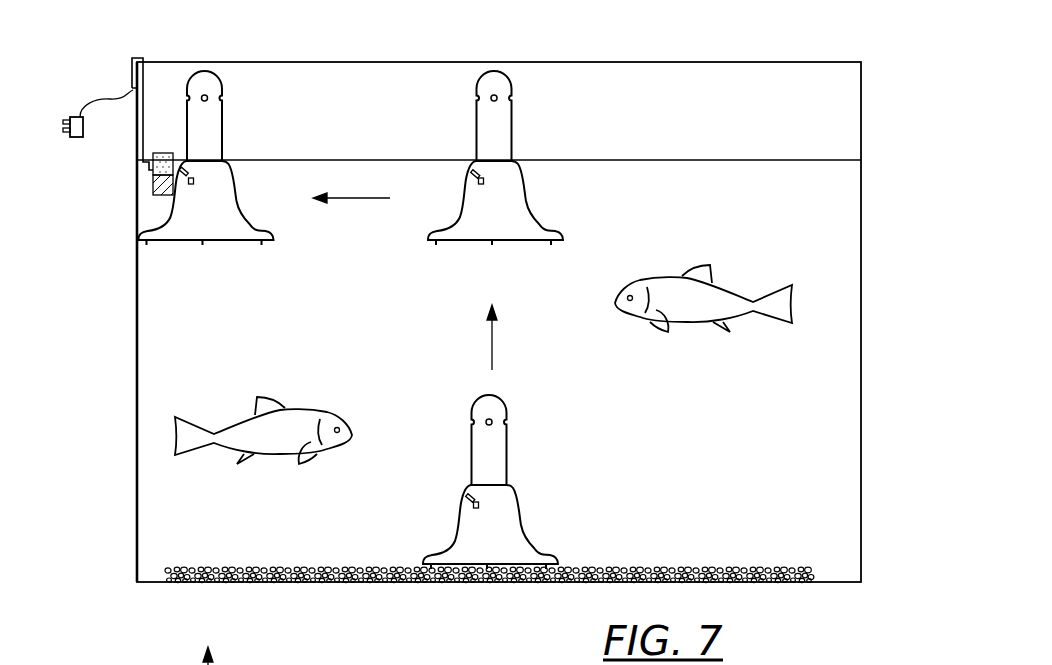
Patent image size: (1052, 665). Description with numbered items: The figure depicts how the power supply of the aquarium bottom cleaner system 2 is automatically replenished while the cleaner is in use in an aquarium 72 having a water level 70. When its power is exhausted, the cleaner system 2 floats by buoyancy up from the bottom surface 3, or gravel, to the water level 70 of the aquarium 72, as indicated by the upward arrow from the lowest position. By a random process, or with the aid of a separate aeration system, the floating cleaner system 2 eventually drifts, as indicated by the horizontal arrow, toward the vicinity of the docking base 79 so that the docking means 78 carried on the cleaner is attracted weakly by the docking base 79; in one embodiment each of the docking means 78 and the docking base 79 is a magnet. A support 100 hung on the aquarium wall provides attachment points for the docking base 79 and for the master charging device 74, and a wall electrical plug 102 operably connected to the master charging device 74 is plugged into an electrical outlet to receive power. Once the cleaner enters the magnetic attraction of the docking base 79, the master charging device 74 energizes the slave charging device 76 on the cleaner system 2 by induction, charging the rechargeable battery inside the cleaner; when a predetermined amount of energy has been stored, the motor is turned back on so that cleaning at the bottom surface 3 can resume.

The aquarium bottom cleaner system 2 is at (545, 551).
The bottom surface 3 is at (703, 567).
The water level 70 is at (714, 160).
The aquarium 72 is at (704, 62).
The master charging device 74 is at (153, 181).
The slave charging device 76 is at (188, 180).
The docking means 78 is at (184, 169).
The docking base 79 is at (153, 158).
The support 100 is at (132, 63).
The wall electrical plug 102 is at (72, 117).